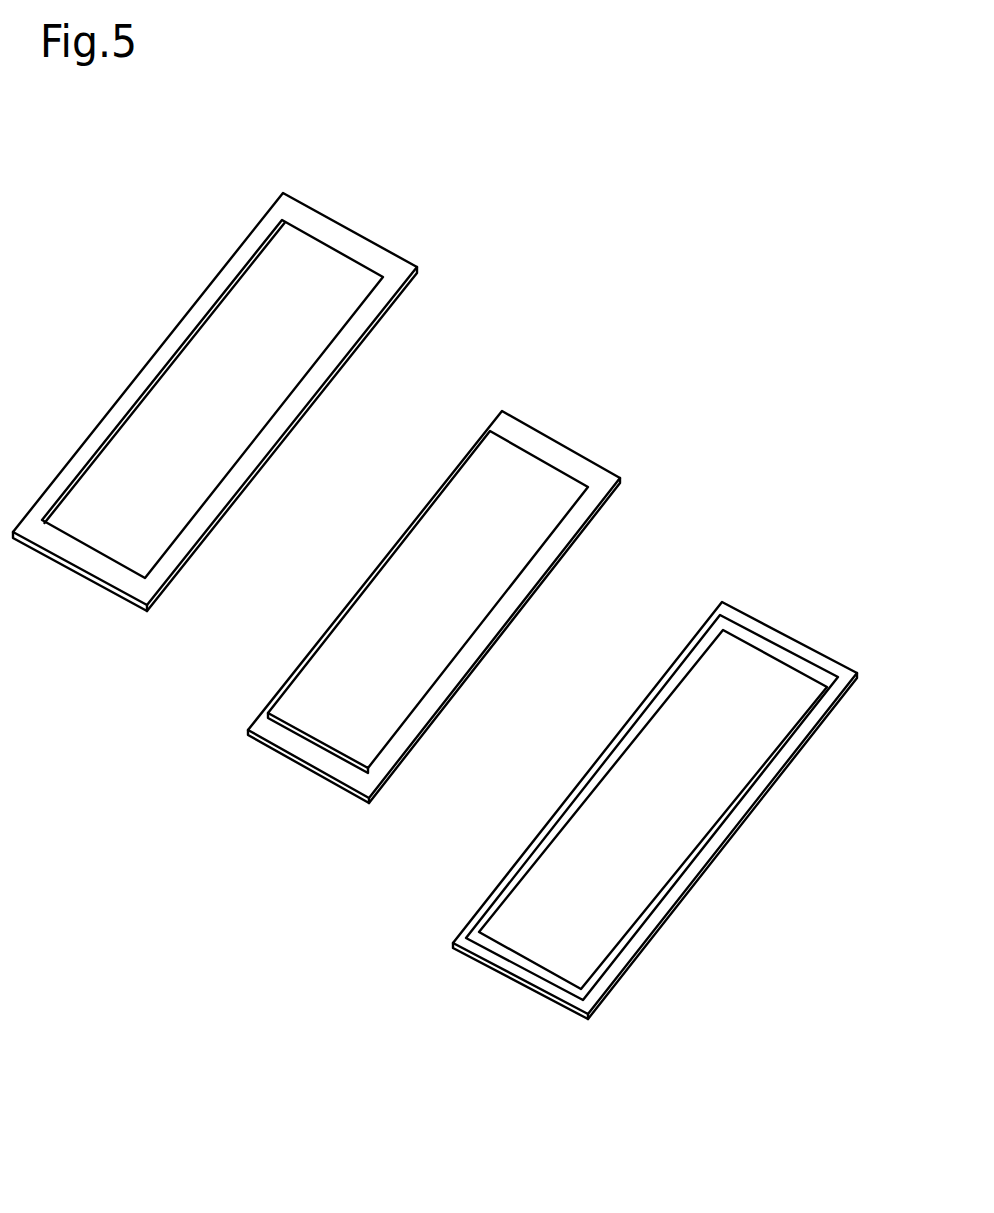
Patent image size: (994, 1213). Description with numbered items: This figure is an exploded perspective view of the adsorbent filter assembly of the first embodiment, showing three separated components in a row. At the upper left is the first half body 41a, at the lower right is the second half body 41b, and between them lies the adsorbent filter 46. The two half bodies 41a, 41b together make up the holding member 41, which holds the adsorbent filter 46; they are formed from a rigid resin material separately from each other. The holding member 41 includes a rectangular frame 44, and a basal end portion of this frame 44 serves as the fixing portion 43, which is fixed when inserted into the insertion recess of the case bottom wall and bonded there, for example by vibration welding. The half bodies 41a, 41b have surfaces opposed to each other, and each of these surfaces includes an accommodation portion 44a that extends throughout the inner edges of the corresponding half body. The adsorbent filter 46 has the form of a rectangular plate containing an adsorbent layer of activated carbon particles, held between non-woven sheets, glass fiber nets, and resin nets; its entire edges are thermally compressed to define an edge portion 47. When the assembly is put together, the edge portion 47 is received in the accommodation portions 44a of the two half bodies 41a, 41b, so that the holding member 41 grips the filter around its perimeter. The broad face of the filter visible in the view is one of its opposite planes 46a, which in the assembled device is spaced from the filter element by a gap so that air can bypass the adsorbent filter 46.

The holding member 41 is at (435, 596).
The first half body 41a is at (307, 204).
The second half body 41b is at (655, 812).
The fixing portion 43 is at (435, 596).
The rectangular frame 44 is at (435, 596).
The accommodation portion 44a is at (553, 981).
The adsorbent filter 46 is at (415, 602).
The plane 46a is at (337, 662).
The edge portion 47 is at (431, 603).